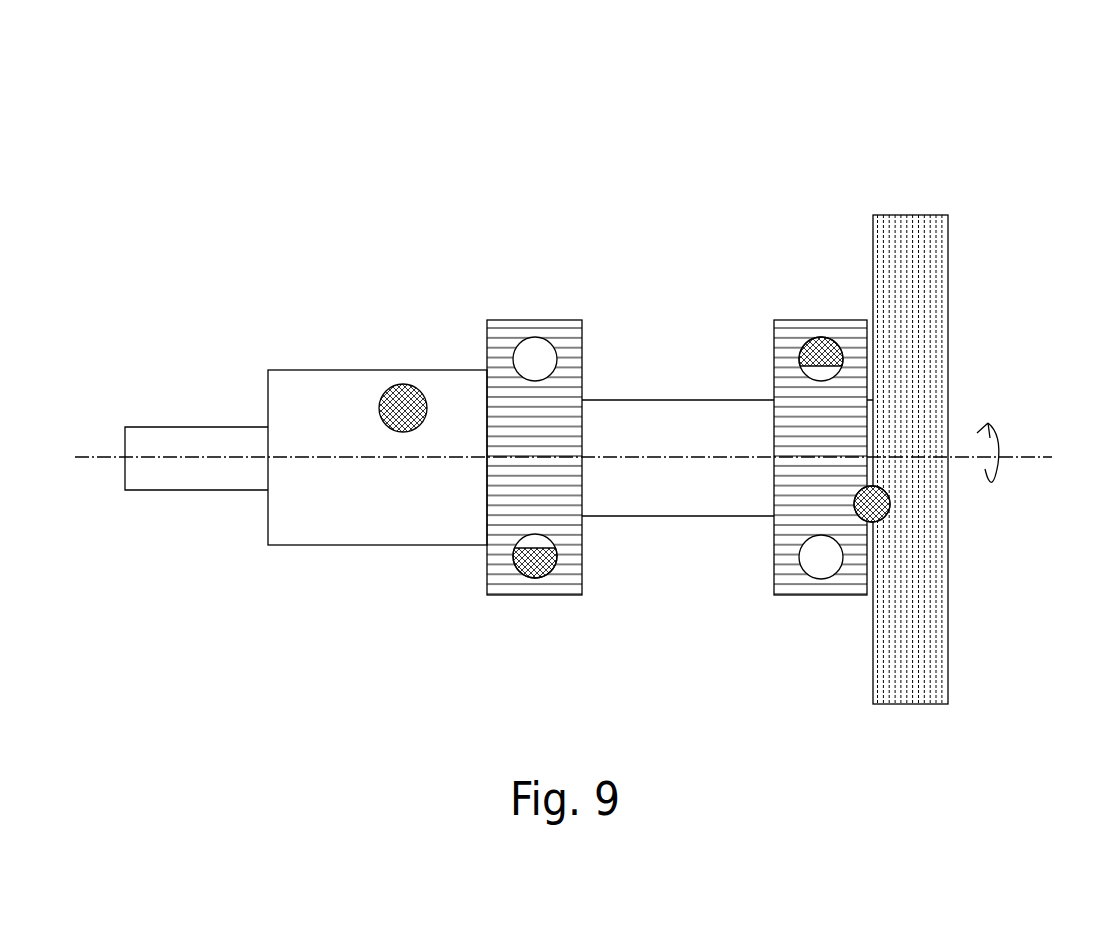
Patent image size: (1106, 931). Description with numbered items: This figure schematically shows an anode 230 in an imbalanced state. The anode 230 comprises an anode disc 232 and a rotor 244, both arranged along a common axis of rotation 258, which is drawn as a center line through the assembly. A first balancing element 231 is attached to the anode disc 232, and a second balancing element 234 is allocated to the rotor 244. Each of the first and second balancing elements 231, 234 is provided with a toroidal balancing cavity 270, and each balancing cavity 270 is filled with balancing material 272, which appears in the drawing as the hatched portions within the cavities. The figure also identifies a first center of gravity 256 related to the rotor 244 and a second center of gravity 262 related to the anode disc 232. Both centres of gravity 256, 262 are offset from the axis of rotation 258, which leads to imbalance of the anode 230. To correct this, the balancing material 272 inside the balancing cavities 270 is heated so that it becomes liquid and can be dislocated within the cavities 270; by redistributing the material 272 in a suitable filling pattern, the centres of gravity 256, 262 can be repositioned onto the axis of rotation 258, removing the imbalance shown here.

The anode 230 is at (1000, 132).
The first balancing element 231 is at (785, 327).
The anode disc 232 is at (898, 224).
The second balancing element 234 is at (507, 323).
The rotor 244 is at (332, 522).
The first center of gravity 256 is at (402, 387).
The axis of rotation 258 is at (1012, 454).
The second center of gravity 262 is at (892, 510).
The toroidal balancing cavity 270 is at (540, 349).
The balancing material 272 is at (518, 562).